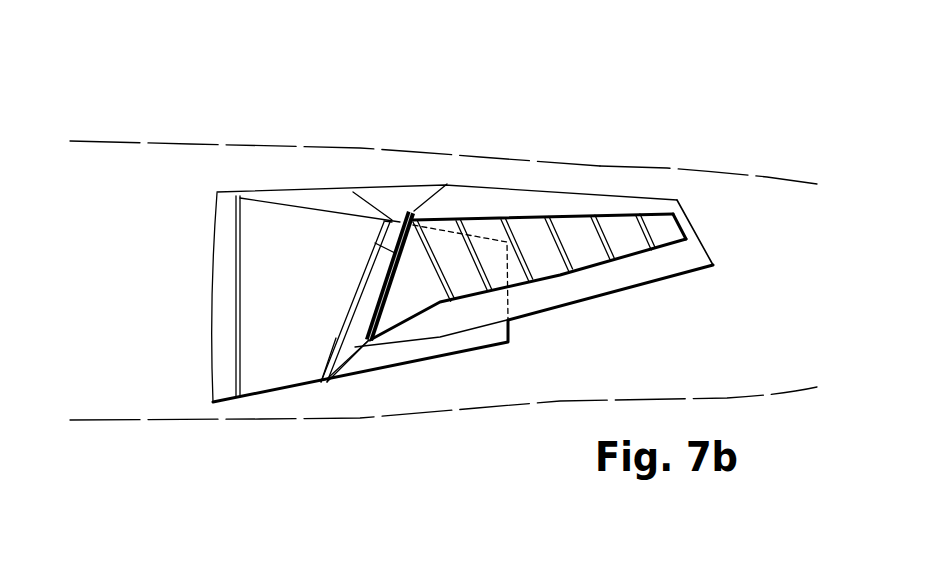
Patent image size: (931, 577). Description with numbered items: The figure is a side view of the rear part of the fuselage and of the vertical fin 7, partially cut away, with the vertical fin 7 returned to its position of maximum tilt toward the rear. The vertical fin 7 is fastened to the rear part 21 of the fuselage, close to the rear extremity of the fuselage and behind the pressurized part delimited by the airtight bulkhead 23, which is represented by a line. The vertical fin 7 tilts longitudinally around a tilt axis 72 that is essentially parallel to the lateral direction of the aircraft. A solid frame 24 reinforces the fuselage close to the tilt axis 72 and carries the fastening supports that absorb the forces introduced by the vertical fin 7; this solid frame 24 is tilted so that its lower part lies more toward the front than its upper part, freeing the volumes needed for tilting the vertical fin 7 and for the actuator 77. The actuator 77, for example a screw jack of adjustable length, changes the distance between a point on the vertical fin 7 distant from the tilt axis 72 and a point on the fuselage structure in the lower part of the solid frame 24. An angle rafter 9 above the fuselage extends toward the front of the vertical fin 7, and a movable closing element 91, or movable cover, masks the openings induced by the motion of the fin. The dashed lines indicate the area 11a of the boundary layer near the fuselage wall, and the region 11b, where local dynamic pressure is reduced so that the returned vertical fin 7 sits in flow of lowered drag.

The vertical fin 7 is at (627, 176).
The angle rafter 9 is at (277, 176).
The area of the boundary layer 11a is at (311, 158).
The outer surface line 11b is at (785, 208).
The rear part of the fuselage 21 is at (423, 352).
The airtight bulkhead 23 is at (233, 362).
The solid frame 24 is at (336, 338).
The tilt axis 72 is at (370, 236).
The actuator 77 is at (352, 346).
The movable closing element 91 is at (401, 204).